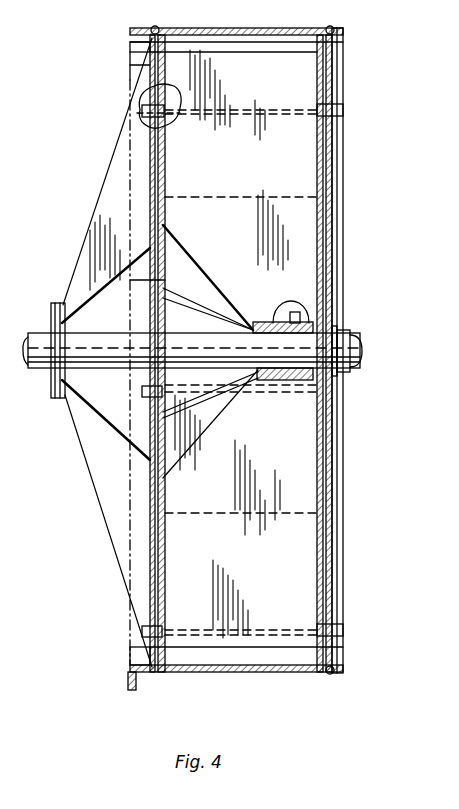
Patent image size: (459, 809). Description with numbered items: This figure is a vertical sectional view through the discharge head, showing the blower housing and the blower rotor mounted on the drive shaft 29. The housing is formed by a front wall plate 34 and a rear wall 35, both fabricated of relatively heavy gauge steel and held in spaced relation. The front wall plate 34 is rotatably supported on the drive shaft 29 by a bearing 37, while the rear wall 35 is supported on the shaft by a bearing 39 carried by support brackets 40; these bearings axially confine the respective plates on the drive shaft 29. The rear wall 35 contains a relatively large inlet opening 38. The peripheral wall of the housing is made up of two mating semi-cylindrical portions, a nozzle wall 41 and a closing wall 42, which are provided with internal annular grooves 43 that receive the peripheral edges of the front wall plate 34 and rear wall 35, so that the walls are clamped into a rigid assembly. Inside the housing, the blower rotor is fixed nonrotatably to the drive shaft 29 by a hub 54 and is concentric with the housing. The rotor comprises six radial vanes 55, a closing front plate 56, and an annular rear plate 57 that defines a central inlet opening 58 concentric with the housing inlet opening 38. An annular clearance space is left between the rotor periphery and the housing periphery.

The drive shaft 29 is at (349, 335).
The front wall plate 34 is at (336, 208).
The rear wall 35 is at (156, 572).
The bearing 37 is at (345, 376).
The inlet opening 38 is at (150, 440).
The bearing 39 is at (54, 306).
The support brackets 40 is at (98, 198).
The nozzle wall 41 is at (248, 32).
The closing wall 42 is at (235, 674).
The internal annular grooves 43 is at (138, 36).
The hub 54 is at (288, 388).
The radial vanes 55 is at (290, 130).
The closing front plate 56 is at (322, 451).
The annular rear plate 57 is at (150, 602).
The central inlet opening 58 is at (168, 230).